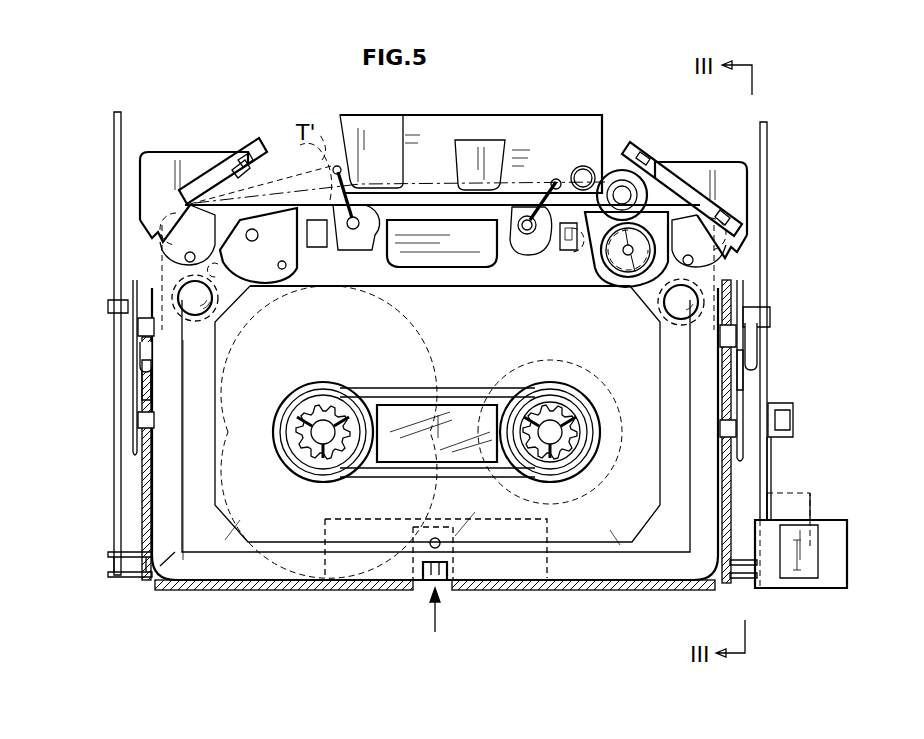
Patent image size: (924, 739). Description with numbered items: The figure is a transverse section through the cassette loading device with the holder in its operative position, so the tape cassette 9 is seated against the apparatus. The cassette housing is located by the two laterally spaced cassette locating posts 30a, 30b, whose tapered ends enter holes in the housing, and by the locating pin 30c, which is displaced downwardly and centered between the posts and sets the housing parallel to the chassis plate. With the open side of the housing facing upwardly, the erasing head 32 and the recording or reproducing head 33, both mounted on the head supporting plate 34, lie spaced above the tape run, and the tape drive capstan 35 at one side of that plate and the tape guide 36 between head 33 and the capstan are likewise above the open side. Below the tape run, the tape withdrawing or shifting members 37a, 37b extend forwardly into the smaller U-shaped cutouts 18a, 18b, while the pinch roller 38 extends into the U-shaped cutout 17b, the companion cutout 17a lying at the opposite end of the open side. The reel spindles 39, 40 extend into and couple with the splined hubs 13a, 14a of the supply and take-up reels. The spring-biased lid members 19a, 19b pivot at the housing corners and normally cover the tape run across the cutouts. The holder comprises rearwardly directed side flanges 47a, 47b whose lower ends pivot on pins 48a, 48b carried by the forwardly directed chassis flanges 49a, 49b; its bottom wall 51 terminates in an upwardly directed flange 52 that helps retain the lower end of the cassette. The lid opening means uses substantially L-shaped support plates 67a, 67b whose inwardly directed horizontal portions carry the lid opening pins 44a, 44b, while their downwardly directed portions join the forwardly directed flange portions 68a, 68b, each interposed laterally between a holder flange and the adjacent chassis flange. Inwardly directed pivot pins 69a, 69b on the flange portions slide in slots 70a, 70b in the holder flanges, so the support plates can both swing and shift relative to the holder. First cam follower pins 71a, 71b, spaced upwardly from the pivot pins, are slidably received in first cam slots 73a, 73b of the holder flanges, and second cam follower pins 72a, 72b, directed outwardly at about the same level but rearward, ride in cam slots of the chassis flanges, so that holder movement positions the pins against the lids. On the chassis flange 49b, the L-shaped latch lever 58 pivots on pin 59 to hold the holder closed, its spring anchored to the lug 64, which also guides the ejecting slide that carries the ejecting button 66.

The tape cassette 9 is at (210, 560).
The cylindrical hub 13a is at (335, 455).
The cylindrical hub 14a is at (575, 410).
The U-shaped cutout 17a is at (292, 264).
The U-shaped cutout 17b is at (598, 276).
The smaller U-shaped cutout 18a is at (398, 258).
The smaller U-shaped cutout 18b is at (515, 252).
The lid member 19a is at (220, 168).
The lid member 19b is at (650, 172).
The cassette locating post 30a is at (185, 292).
The cassette locating post 30b is at (690, 300).
The locating pin 30c is at (425, 560).
The erasing head 32 is at (382, 135).
The recording or reproducing head 33 is at (490, 140).
The head supporting plate 34 is at (528, 134).
The tape drive capstan 35 is at (612, 176).
The tape guide 36 is at (575, 168).
The tape withdrawing or shifting member 37a is at (353, 232).
The tape withdrawing or shifting member 37b is at (538, 250).
The pinch roller 38 is at (628, 278).
The reel mounting member or spindle 39 is at (300, 448).
The reel mounting member or spindle 40 is at (568, 470).
The lid opening pin 44a is at (255, 148).
The lid opening pin 44b is at (690, 170).
The side flange 47a is at (125, 500).
The side flange 47b is at (765, 492).
The pivot pin 48a is at (132, 580).
The pivot pin 48b is at (732, 580).
The chassis flange 49a is at (120, 412).
The chassis flange 49b is at (745, 356).
The bottom wall 51 is at (268, 592).
The upwardly directed flange 52 is at (568, 590).
The L-shaped latch lever 58 is at (772, 450).
The pin 59 is at (795, 420).
The lug 64 is at (835, 572).
The ejecting button 66 is at (815, 540).
The support plate 67a is at (165, 160).
The support plate 67b is at (690, 172).
The flange portion 68a is at (140, 358).
The flange portion 68b is at (752, 400).
The pivot pin 69a is at (140, 432).
The pivot pin 69b is at (722, 430).
The slot 70a is at (140, 468).
The slot 70b is at (735, 470).
The first cam follower pin 71a is at (140, 326).
The first cam follower pin 71b is at (740, 328).
The second cam follower pin 72a is at (112, 302).
The second cam follower pin 72b is at (768, 312).
The first cam slot 73a is at (148, 375).
The first cam slot 73b is at (745, 382).